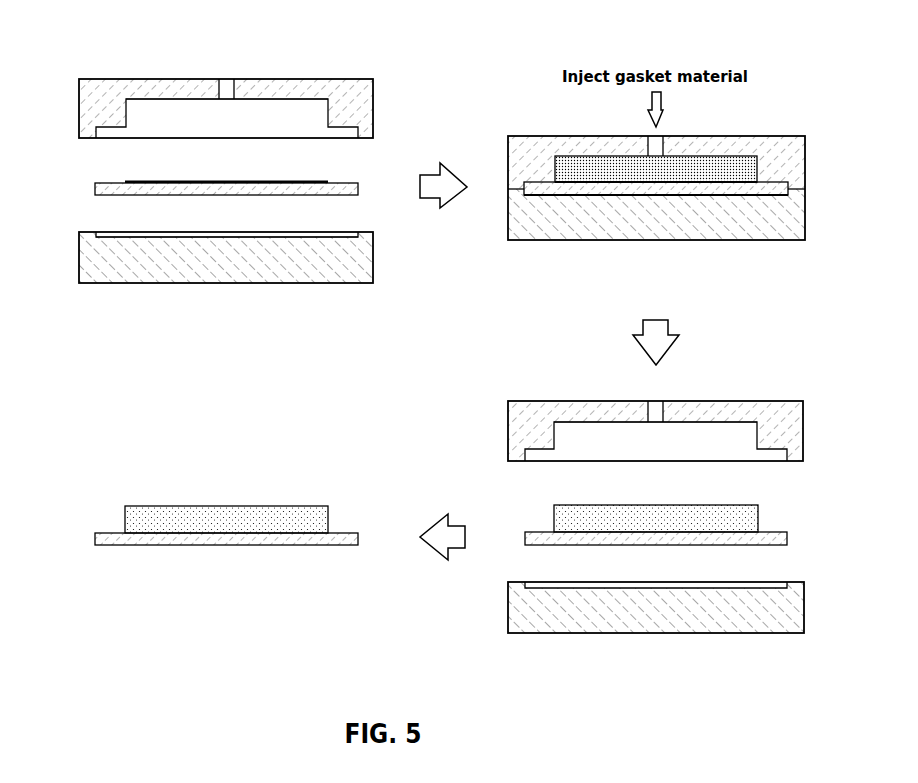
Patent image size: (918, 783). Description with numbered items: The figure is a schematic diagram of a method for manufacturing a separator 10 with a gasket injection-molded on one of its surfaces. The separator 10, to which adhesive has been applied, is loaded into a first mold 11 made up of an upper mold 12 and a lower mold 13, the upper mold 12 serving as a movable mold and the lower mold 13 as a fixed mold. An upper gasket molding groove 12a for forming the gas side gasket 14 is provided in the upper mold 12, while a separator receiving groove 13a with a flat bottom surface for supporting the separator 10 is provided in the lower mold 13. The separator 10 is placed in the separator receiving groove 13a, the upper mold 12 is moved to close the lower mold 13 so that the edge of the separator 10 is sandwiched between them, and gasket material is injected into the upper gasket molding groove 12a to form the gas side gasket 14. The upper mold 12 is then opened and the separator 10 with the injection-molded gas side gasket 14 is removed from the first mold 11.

The separator 10 is at (86, 191).
The first mold 11 is at (610, 181).
The upper mold 12 is at (366, 94).
The upper gasket molding groove 12a is at (283, 104).
The lower mold 13 is at (343, 268).
The separator receiving groove 13a is at (333, 230).
The gas side gasket 14 is at (586, 158).